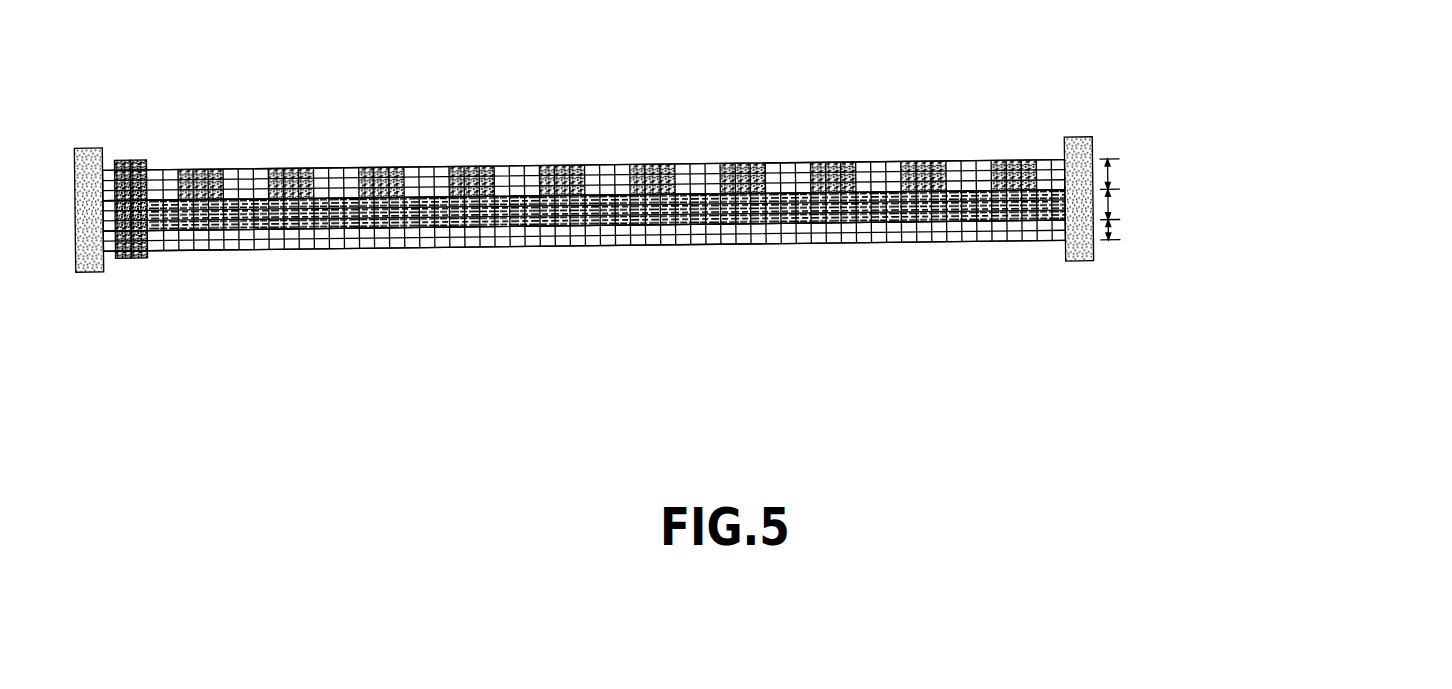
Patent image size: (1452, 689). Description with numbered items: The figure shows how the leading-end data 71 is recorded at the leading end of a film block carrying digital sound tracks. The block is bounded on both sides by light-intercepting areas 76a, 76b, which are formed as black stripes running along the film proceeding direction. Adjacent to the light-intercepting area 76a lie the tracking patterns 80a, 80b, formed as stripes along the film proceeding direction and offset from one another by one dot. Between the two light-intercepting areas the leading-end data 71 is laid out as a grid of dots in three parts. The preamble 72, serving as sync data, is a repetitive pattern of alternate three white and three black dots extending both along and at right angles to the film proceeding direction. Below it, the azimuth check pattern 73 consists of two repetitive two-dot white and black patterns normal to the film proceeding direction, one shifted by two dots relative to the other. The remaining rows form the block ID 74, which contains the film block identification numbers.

The leading-end data 71 is at (681, 152).
The preamble 72 is at (1115, 176).
The azimuth check pattern 73 is at (1116, 203).
The block ID 74 is at (1116, 228).
The light-intercepting area 76a is at (95, 148).
The light-intercepting area 76b is at (1081, 137).
The tracking pattern 80a is at (129, 160).
The tracking pattern 80b is at (153, 170).